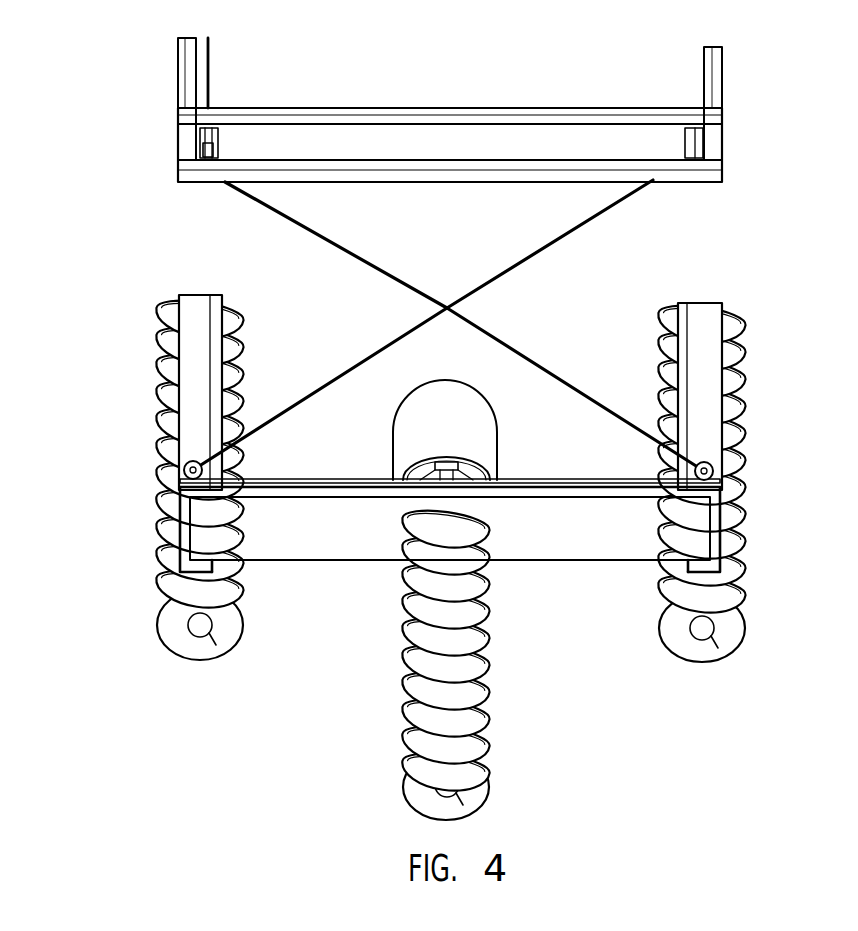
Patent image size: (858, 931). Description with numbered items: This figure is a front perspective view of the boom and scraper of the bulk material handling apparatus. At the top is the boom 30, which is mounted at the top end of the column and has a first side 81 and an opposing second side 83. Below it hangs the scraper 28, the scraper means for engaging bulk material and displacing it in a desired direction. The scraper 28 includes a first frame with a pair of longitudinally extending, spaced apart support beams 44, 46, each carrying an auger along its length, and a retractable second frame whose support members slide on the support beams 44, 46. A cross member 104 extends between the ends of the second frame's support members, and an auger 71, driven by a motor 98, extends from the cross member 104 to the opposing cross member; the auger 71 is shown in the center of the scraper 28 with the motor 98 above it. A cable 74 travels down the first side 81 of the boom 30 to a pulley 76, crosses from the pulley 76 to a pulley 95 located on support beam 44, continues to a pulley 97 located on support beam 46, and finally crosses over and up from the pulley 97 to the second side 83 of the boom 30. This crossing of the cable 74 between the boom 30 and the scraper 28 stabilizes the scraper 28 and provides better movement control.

The scraper 28 is at (742, 659).
The boom 30 is at (462, 110).
The support beam 44 is at (704, 403).
The support beam 46 is at (191, 354).
The auger 71 is at (499, 697).
The cable 74 is at (365, 258).
The pulley 76 is at (200, 145).
The first side 81 is at (188, 78).
The second side 83 is at (714, 78).
The pulley 95 is at (713, 469).
The pulley 97 is at (183, 475).
The motor 98 is at (485, 448).
The cross member 104 is at (587, 545).